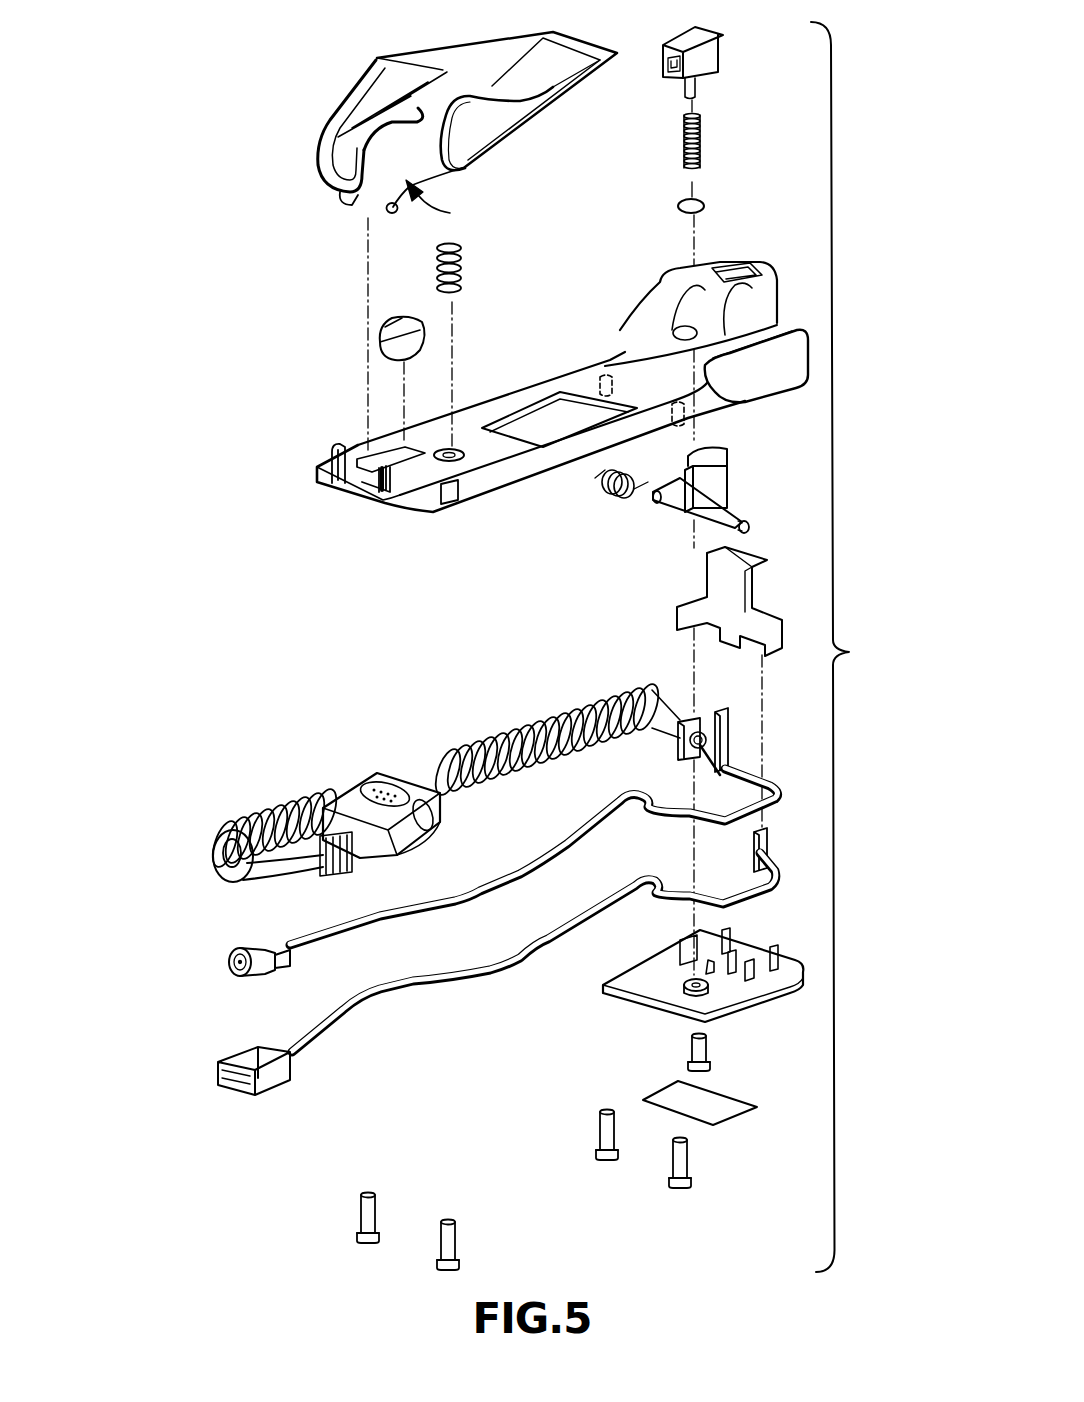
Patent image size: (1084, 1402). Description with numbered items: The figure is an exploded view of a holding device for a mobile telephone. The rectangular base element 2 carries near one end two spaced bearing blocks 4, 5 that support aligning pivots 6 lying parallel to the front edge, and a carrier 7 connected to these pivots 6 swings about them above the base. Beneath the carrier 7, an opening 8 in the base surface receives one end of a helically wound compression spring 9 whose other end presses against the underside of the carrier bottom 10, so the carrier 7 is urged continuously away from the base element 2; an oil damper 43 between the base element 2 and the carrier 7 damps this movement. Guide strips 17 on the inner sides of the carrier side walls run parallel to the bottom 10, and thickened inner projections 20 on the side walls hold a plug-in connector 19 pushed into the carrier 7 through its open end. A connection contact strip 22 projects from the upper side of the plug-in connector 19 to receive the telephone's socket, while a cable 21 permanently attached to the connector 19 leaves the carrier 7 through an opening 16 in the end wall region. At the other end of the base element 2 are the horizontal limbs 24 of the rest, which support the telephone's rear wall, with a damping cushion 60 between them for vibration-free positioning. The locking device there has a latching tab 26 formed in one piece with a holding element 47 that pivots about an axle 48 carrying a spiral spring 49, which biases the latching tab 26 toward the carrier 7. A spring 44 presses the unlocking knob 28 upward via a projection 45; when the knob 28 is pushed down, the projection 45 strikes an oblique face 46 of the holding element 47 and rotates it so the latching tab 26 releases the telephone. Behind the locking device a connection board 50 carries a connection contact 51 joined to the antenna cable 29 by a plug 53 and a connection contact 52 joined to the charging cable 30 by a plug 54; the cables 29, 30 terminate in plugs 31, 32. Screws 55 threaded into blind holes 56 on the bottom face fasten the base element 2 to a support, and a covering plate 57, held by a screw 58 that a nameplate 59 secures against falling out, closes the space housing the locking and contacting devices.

The base element 2 is at (500, 398).
The bearing block 4 is at (338, 447).
The bearing block 5 is at (392, 488).
The aligning pivots 6 is at (383, 213).
The carrier 7 is at (436, 203).
The opening 8 is at (470, 463).
The compression spring 9 is at (468, 258).
The bottom 10 is at (574, 55).
The opening 16 is at (335, 170).
The guide strip 17 is at (443, 70).
The plug-in connector 19 is at (416, 836).
The thickened inner projections 20 is at (343, 140).
The cable 21 is at (512, 733).
The connection contact strip 22 is at (408, 780).
The horizontal limbs 24 is at (650, 322).
The latching tab 26 is at (732, 466).
The unlocking knob 28 is at (722, 54).
The antenna cable 29 is at (300, 940).
The charging cable 30 is at (345, 1002).
The plug 31 is at (240, 950).
The plug 32 is at (258, 1045).
The oil damper 43 is at (380, 345).
The spring 44 is at (703, 150).
The projection 45 is at (700, 88).
The oblique face 46 is at (671, 504).
The holding element 47 is at (728, 493).
The axle 48 is at (752, 528).
The spiral spring 49 is at (610, 493).
The connection board 50 is at (748, 575).
The connection contact 51 is at (680, 755).
The connection contact 52 is at (770, 612).
The plug 53 is at (707, 735).
The plug 54 is at (773, 850).
The screws 55 is at (680, 1182).
The threaded blind holes 56 is at (446, 508).
The covering plate 57 is at (790, 993).
The screw 58 is at (707, 1050).
The nameplate 59 is at (728, 1118).
The damping cushion 60 is at (706, 199).